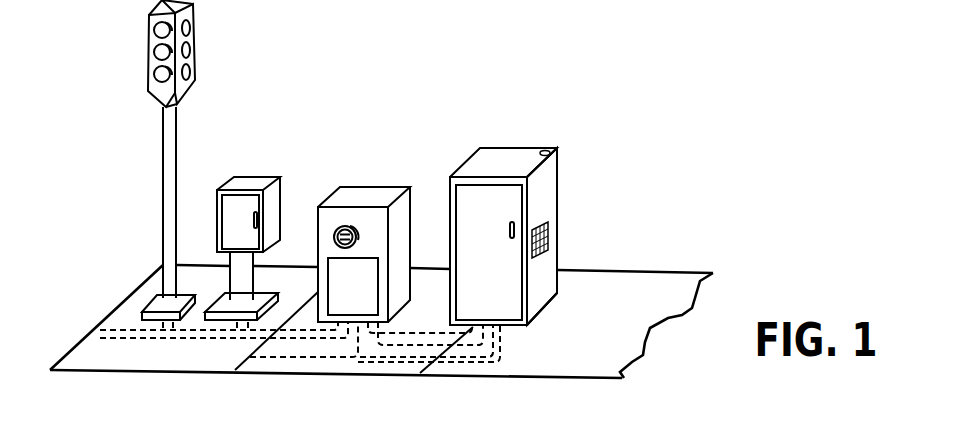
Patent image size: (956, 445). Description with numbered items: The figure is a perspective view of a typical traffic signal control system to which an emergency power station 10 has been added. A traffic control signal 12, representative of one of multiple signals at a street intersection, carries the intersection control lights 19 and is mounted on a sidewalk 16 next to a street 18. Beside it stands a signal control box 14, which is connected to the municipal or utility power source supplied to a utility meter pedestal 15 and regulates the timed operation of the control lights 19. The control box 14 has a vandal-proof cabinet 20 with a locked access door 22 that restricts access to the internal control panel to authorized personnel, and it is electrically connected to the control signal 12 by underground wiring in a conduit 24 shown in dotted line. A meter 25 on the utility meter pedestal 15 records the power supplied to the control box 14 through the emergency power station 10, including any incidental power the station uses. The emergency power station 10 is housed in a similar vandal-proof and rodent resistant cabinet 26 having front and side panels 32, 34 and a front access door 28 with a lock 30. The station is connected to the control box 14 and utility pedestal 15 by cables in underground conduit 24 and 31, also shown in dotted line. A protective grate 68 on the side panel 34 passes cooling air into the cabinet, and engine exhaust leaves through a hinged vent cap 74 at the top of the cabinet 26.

The emergency power station 10 is at (515, 211).
The traffic control signal 12 is at (164, 218).
The signal control box 14 is at (258, 228).
The utility meter pedestal 15 is at (378, 235).
The sidewalk 16 is at (586, 323).
The street 18 is at (660, 260).
The intersection control lights 19 is at (153, 57).
The vandal-proof cabinet 20 is at (213, 203).
The locked access door 22 is at (243, 200).
The conduit 24 is at (195, 338).
The meter 25 is at (357, 233).
The cabinet 26 is at (553, 181).
The front access door 28 is at (505, 193).
The lock 30 is at (507, 228).
The underground conduit 31 is at (505, 347).
The front panel 32 is at (522, 287).
The side panel 34 is at (553, 208).
The protective grate 68 is at (550, 235).
The hinged vent cap 74 is at (548, 152).